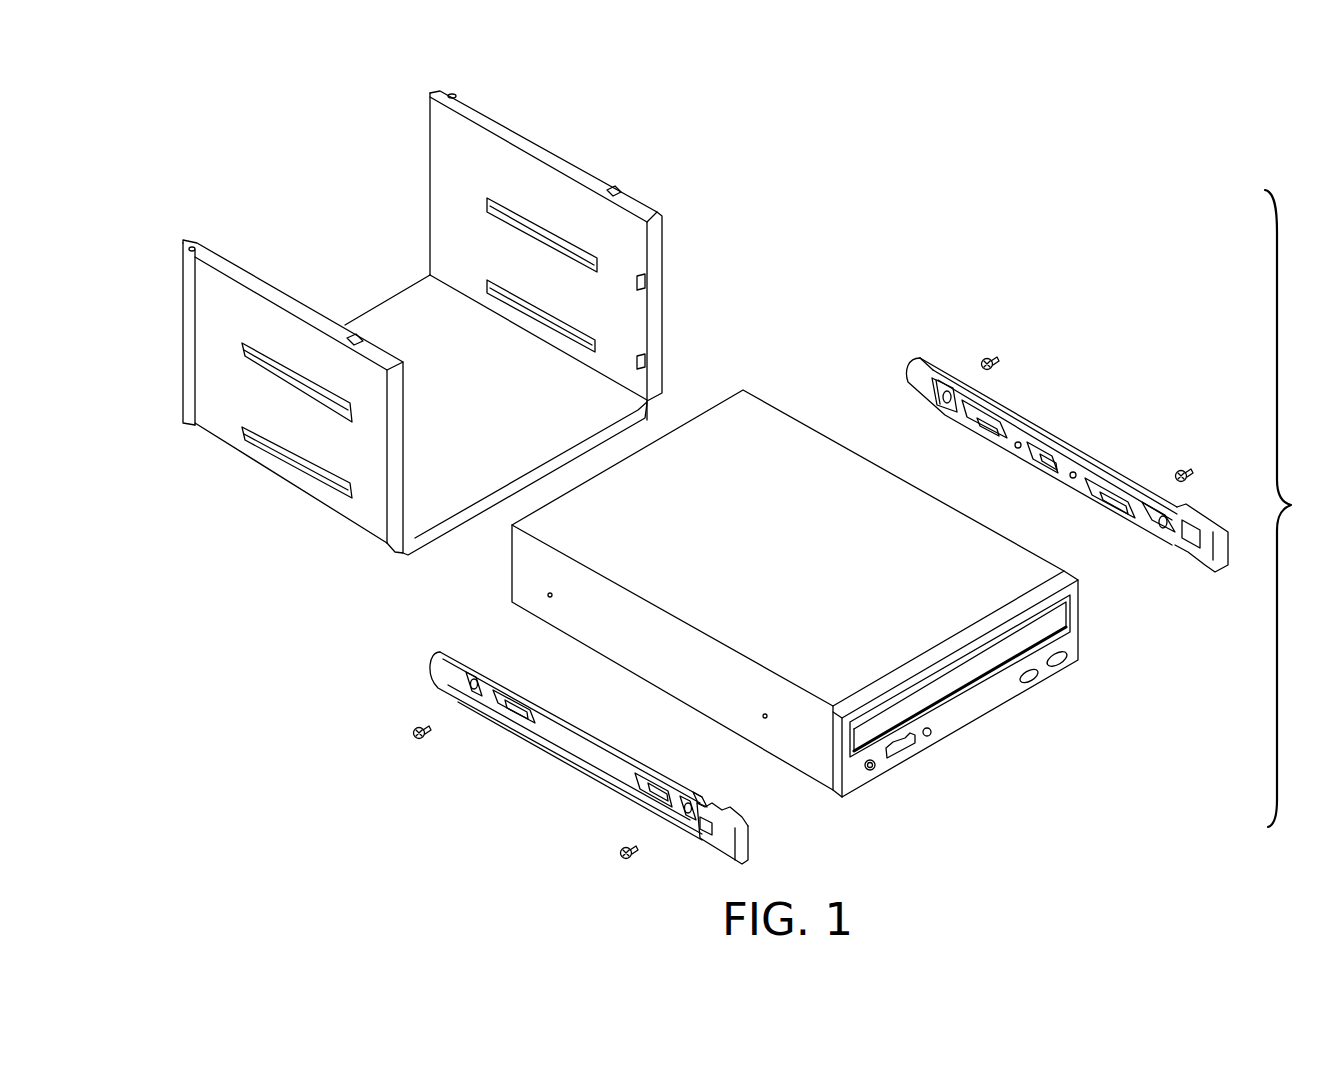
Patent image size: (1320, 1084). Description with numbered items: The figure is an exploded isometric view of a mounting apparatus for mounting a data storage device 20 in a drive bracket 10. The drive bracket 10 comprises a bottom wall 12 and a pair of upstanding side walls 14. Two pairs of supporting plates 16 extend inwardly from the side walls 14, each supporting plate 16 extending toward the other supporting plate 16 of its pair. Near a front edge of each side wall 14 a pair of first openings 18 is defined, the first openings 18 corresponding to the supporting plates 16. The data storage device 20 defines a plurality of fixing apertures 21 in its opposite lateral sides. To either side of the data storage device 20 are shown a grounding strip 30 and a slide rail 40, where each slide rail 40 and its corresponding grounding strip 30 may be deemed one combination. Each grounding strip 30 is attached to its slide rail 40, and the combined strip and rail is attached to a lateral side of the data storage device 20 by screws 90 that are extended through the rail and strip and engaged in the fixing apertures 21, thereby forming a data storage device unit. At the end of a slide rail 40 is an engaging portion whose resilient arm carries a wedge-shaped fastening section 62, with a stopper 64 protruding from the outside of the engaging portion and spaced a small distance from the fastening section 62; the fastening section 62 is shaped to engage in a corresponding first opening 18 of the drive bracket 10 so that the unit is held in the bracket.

The drive bracket 10 is at (624, 164).
The bottom wall 12 is at (412, 305).
The side walls 14 is at (495, 165).
The supporting plates 16 is at (540, 322).
The first openings 18 is at (641, 361).
The data storage device 20 is at (762, 425).
The fixing apertures 21 is at (550, 595).
The grounding strip 30 is at (1075, 467).
The slide rail 40 is at (1033, 424).
The fastening section 62 is at (712, 808).
The stopper 64 is at (722, 815).
The screws 90 is at (412, 733).